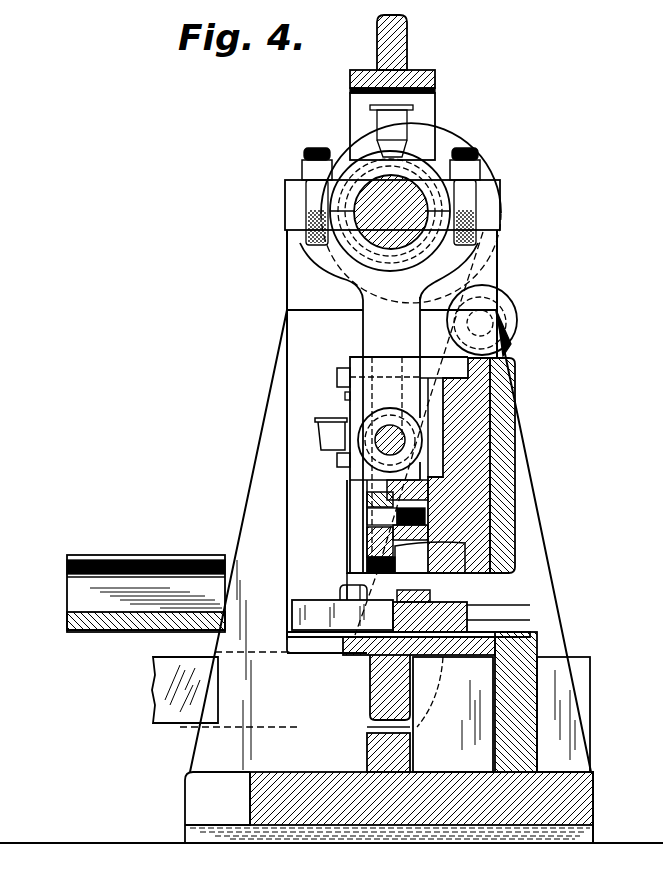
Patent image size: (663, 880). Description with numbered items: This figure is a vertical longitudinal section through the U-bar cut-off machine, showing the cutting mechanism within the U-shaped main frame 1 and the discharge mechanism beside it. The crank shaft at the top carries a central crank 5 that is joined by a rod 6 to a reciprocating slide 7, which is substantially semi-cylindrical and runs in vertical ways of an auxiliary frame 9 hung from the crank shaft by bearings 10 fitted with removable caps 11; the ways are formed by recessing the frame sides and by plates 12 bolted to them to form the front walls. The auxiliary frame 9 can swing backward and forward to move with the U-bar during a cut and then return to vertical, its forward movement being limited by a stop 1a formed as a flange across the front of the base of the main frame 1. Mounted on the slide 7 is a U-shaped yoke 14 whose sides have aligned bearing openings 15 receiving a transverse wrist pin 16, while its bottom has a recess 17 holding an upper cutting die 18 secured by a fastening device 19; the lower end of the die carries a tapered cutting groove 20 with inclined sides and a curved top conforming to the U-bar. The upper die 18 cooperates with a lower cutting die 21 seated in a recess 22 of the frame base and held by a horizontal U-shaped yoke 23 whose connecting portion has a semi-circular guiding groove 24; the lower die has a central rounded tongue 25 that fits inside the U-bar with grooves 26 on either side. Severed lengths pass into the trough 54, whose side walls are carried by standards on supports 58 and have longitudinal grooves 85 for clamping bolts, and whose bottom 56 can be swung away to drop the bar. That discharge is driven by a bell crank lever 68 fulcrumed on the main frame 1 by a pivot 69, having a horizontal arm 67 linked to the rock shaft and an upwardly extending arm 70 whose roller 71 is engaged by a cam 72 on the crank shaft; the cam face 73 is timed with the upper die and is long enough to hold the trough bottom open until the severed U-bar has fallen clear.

The main frame 1 is at (270, 425).
The stop 1a is at (517, 735).
The crank 5 is at (420, 233).
The rod 6 is at (372, 335).
The reciprocating slide 7 is at (462, 420).
The auxiliary frame 9 is at (300, 380).
The bearings 10 is at (290, 262).
The removable caps 11 is at (290, 203).
The plates 12 is at (355, 563).
The yoke 14 is at (362, 480).
The bearing openings 15 is at (545, 643).
The wrist pin 16 is at (378, 450).
The recess 17 is at (395, 535).
The upper cutting die 18 is at (450, 556).
The fastening device 19 is at (358, 513).
The cutting groove 20 is at (380, 565).
The lower cutting die 21 is at (467, 625).
The recess 22 is at (530, 633).
The yoke 23 is at (323, 610).
The groove 24 is at (467, 592).
The tongue 25 is at (467, 605).
The grooves 26 is at (467, 615).
The trough 54 is at (125, 632).
The bottom 56 is at (67, 628).
The supports 58 is at (88, 597).
The horizontal arm 67 is at (175, 710).
The bell crank lever 68 is at (437, 677).
The bolt or pivot 69 is at (443, 705).
The upwardly extending arm 70 is at (505, 327).
The roller 71 is at (513, 306).
The cam 72 is at (445, 150).
The cam face or portion 73 is at (468, 138).
The longitudinal grooves 85 is at (75, 572).